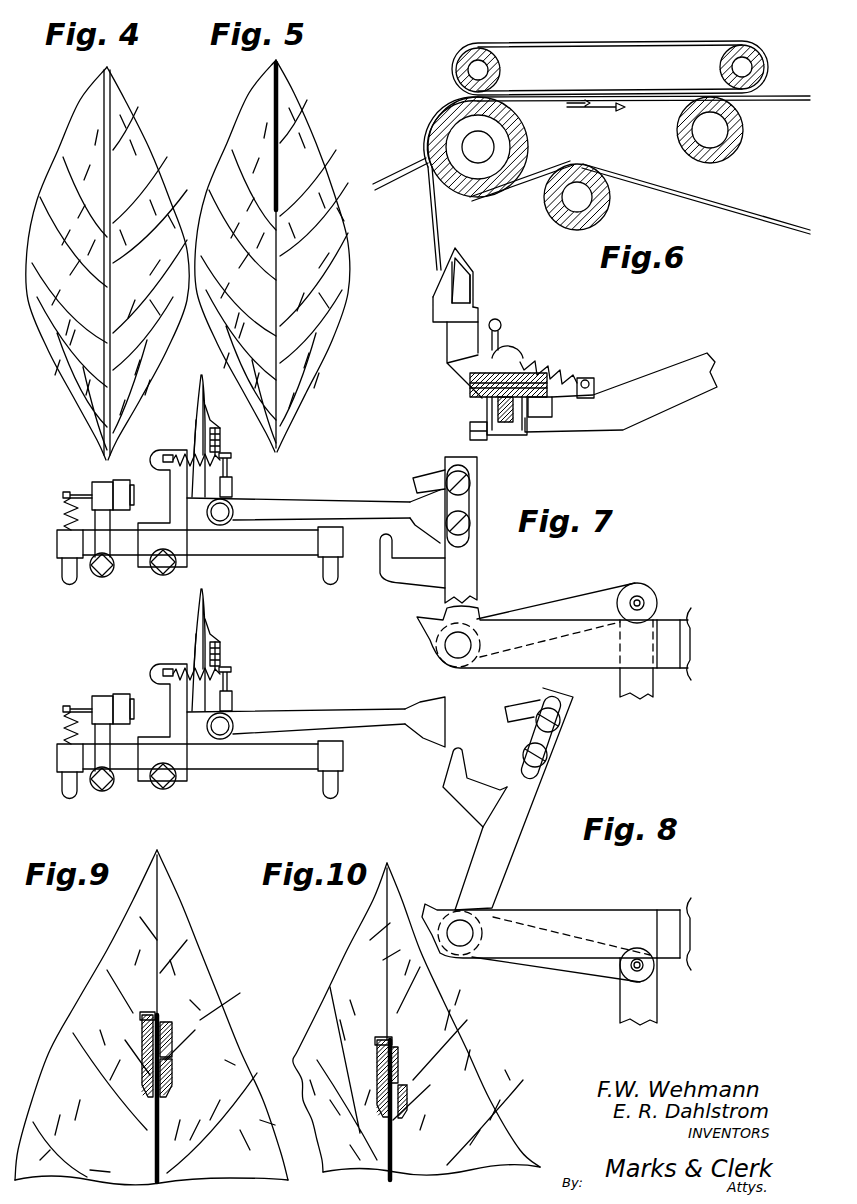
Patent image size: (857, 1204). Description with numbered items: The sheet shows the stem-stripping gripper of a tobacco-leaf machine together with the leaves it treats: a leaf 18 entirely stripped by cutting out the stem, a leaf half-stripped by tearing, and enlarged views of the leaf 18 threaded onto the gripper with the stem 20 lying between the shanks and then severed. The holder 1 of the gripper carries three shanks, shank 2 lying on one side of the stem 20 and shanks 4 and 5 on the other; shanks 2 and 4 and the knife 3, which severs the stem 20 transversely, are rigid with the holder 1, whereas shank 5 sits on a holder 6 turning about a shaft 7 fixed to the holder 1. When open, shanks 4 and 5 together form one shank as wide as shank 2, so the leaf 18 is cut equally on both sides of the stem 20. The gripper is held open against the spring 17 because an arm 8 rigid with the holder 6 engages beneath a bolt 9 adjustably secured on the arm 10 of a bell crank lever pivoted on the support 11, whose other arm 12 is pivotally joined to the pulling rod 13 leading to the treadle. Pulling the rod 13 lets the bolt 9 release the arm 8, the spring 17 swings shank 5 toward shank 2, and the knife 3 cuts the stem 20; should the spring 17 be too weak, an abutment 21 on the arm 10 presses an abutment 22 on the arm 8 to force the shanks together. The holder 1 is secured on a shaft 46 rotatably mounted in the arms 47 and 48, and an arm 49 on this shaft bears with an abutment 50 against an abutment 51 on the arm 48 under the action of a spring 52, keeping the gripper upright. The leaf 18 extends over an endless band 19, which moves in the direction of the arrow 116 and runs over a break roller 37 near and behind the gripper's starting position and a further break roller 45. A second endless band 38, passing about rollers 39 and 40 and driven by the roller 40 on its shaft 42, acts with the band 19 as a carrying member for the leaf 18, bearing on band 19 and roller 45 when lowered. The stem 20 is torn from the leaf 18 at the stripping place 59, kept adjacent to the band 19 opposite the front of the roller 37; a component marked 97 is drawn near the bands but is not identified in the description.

In FIG. 6, the holder of the gripper 1 is at (495, 440).
In FIG. 7, the holder of the gripper 1 is at (178, 560).
In FIG. 8, the holder of the gripper 1 is at (142, 736).
In FIG. 7, the shank 2 is at (198, 393).
In FIG. 8, the shank 2 is at (185, 650).
In FIG. 9, the shank 2 is at (142, 1036).
In FIG. 10, the shank 2 is at (377, 1069).
In FIG. 6, the knife 3 is at (478, 286).
In FIG. 7, the knife 3 is at (192, 442).
In FIG. 8, the knife 3 is at (178, 646).
In FIG. 9, the knife 3 is at (142, 1025).
In FIG. 10, the knife 3 is at (382, 1040).
In FIG. 6, the shank 4 is at (447, 295).
In FIG. 7, the shank 4 is at (216, 426).
In FIG. 8, the shank 4 is at (220, 640).
In FIG. 9, the shank 4 is at (172, 1070).
In FIG. 10, the shank 4 is at (407, 1097).
In FIG. 6, the shank 5 is at (466, 260).
In FIG. 7, the shank 5 is at (221, 440).
In FIG. 8, the shank 5 is at (228, 652).
In FIG. 9, the shank 5 is at (172, 1035).
In FIG. 10, the shank 5 is at (398, 1052).
In FIG. 6, the holder 6 is at (447, 352).
In FIG. 7, the holder 6 is at (232, 478).
In FIG. 8, the holder 6 is at (234, 689).
In FIG. 6, the shaft 7 is at (470, 384).
In FIG. 7, the shaft 7 is at (233, 506).
In FIG. 8, the shaft 7 is at (237, 713).
In FIG. 7, the arm 8 is at (296, 500).
In FIG. 8, the arm 8 is at (296, 710).
In FIG. 7, the bolt 9 is at (420, 480).
In FIG. 8, the bolt 9 is at (510, 705).
In FIG. 7, the arm of bell crank lever 10 is at (467, 582).
In FIG. 8, the arm of bell crank lever 10 is at (518, 832).
In FIG. 7, the support 11 is at (596, 660).
In FIG. 8, the support 11 is at (555, 910).
In FIG. 7, the arm of bell crank lever 12 is at (555, 605).
In FIG. 8, the arm of bell crank lever 12 is at (588, 968).
In FIG. 7, the pulling rod 13 is at (643, 688).
In FIG. 8, the pulling rod 13 is at (642, 1010).
In FIG. 6, the spring 17 is at (500, 324).
In FIG. 7, the spring 17 is at (166, 455).
In FIG. 6, the leaf 18 is at (428, 132).
In FIG. 9, the leaf 18 is at (178, 927).
In FIG. 10, the leaf 18 is at (437, 995).
In FIG. 6, the endless band 19 is at (773, 94).
In FIG. 6, the stem 20 is at (432, 221).
In FIG. 9, the stem 20 is at (152, 1142).
In FIG. 10, the stem 20 is at (394, 1136).
In FIG. 7, the abutment 21 is at (384, 553).
In FIG. 8, the abutment 21 is at (466, 762).
In FIG. 7, the abutment 22 is at (432, 528).
In FIG. 8, the abutment 22 is at (428, 742).
In FIG. 6, the break roller 37 is at (458, 110).
In FIG. 6, the endless band 38 is at (582, 43).
In FIG. 6, the roller 39 is at (468, 58).
In FIG. 6, the roller 40 is at (742, 45).
In FIG. 6, the shaft 42 is at (748, 63).
In FIG. 6, the break roller 45 is at (744, 133).
In FIG. 6, the shaft 46 is at (490, 414).
In FIG. 7, the shaft 46 is at (259, 546).
In FIG. 8, the shaft 46 is at (200, 770).
In FIG. 7, the arm 47 is at (326, 549).
In FIG. 8, the arm 47 is at (314, 770).
In FIG. 6, the arm 48 is at (628, 422).
In FIG. 7, the arm 48 is at (66, 552).
In FIG. 8, the arm 48 is at (59, 776).
In FIG. 7, the arm 49 is at (98, 482).
In FIG. 8, the arm 49 is at (93, 719).
In FIG. 6, the abutment 50 is at (572, 403).
In FIG. 6, the abutment 51 is at (545, 418).
In FIG. 6, the spring 52 is at (562, 370).
In FIG. 7, the spring 52 is at (65, 512).
In FIG. 8, the spring 52 is at (62, 724).
In FIG. 6, the place of stripping 59 is at (422, 160).
In FIG. 7, the place of stripping 59 is at (122, 480).
In FIG. 8, the place of stripping 59 is at (166, 696).
In FIG. 6, the roller 97 is at (603, 213).
In FIG. 6, the arrow 116 is at (592, 112).